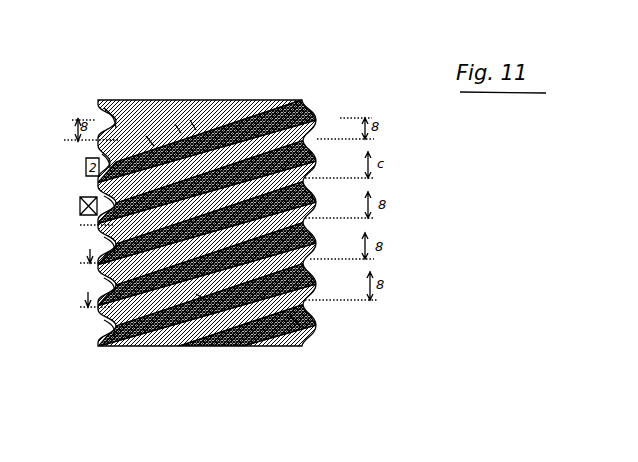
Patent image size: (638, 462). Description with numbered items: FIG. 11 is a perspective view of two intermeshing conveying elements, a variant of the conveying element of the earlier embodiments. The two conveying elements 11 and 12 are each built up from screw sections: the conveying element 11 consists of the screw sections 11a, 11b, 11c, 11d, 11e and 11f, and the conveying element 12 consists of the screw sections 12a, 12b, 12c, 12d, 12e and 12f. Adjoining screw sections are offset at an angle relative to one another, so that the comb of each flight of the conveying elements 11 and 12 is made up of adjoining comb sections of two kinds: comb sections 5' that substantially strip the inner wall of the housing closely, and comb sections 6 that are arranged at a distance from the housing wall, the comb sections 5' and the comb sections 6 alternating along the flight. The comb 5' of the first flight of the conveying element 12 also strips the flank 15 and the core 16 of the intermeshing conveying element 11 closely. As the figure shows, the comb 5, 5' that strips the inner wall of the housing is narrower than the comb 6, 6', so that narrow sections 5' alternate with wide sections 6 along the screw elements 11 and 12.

The conveying element 11 is at (153, 380).
The screw section 11a is at (99, 110).
The screw section 11b is at (86, 166).
The screw section 11c is at (80, 219).
The screw section 11d is at (90, 257).
The screw section 11e is at (88, 296).
The screw section 11f is at (107, 331).
The conveying element 12 is at (265, 264).
The screw section 12a is at (316, 118).
The screw section 12b is at (312, 168).
The screw section 12c is at (315, 207).
The screw section 12d is at (310, 246).
The screw section 12e is at (305, 284).
The screw section 12f is at (306, 302).
The comb 5 is at (321, 344).
The comb section 5' is at (197, 91).
The comb section 6 is at (249, 93).
The comb 6' is at (196, 344).
The flank 15 is at (178, 128).
The core 16 is at (150, 140).